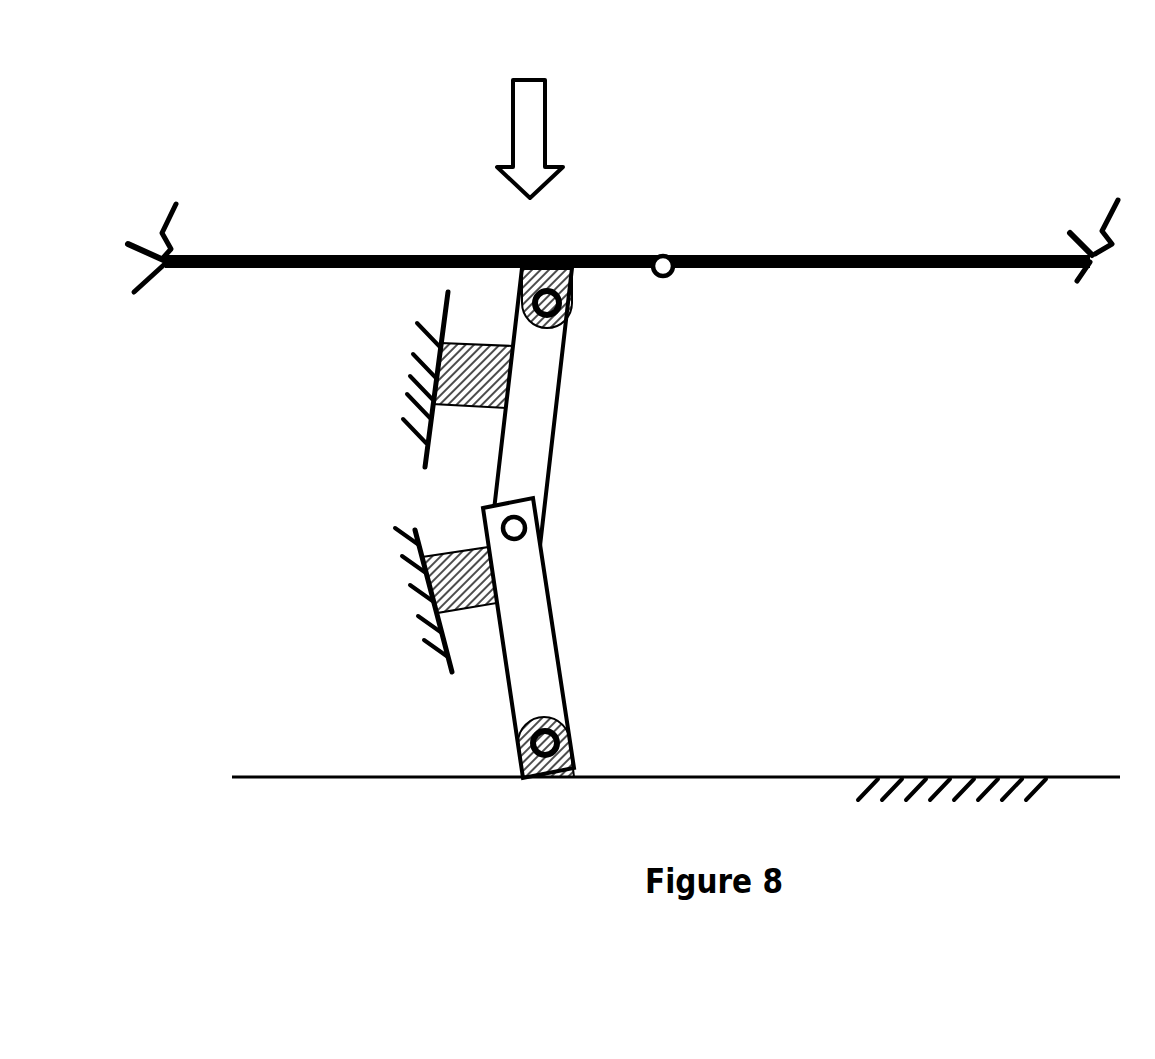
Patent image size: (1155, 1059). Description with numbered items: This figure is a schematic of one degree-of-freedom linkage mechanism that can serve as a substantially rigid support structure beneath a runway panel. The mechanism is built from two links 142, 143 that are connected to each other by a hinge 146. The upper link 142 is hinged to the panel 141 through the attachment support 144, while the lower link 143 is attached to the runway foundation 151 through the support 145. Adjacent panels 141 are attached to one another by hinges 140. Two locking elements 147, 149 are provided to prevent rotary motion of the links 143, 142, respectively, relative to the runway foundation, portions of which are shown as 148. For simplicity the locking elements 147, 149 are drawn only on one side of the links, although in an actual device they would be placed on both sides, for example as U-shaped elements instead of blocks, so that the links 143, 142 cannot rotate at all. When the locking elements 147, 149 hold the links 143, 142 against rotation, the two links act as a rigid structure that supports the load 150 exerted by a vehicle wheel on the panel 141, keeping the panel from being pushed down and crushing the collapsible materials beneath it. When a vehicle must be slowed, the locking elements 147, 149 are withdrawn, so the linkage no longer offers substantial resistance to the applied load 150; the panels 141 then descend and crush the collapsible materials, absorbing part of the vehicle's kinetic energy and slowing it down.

The hinge 140 is at (665, 244).
The panel 141 is at (338, 246).
The link 142 is at (570, 397).
The link 143 is at (573, 653).
The attachment support 144 is at (574, 293).
The support 145 is at (574, 745).
The hinge 146 is at (479, 524).
The locking element 147 is at (460, 575).
The runway foundation portion 148 is at (418, 443).
The locking element 149 is at (475, 363).
The load 150 is at (530, 114).
The runway foundation 151 is at (893, 774).